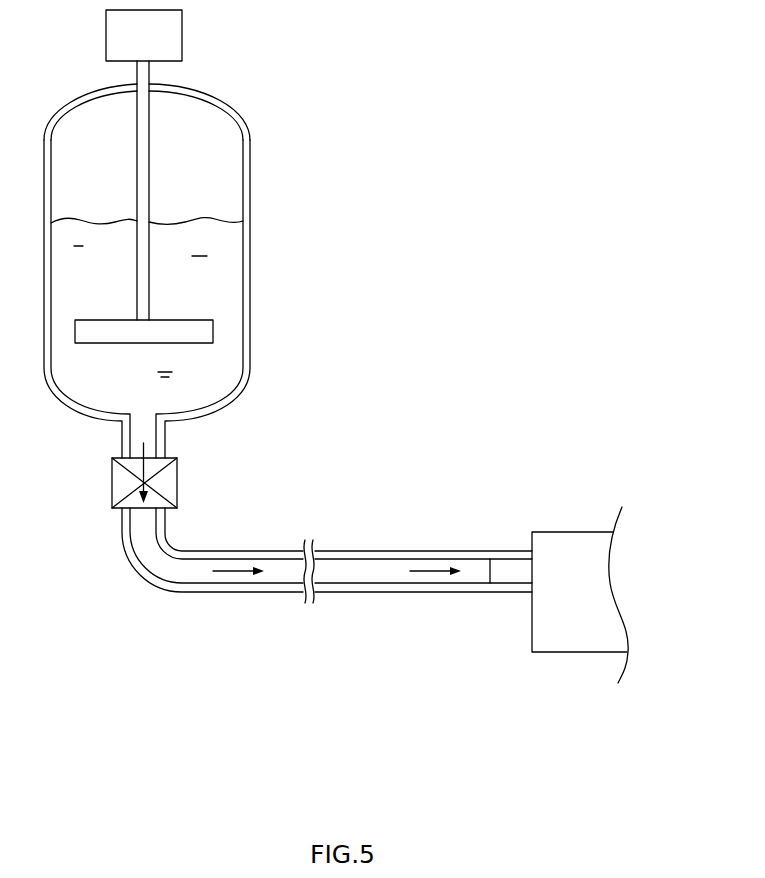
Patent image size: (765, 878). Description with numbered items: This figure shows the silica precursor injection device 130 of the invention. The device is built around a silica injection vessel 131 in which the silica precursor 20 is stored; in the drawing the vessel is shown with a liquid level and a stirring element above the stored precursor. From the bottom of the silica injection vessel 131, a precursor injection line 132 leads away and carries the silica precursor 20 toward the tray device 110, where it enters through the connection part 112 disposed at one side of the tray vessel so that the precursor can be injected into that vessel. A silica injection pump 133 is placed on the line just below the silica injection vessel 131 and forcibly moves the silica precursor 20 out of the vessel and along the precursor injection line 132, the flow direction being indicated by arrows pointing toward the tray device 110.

The silica precursor 20 is at (220, 265).
The tray device 110 is at (572, 532).
The connection part 112 is at (507, 567).
The silica precursor injection device 130 is at (332, 328).
The silica injection vessel 131 is at (243, 331).
The precursor injection line 132 is at (354, 557).
The silica injection pump 133 is at (177, 484).